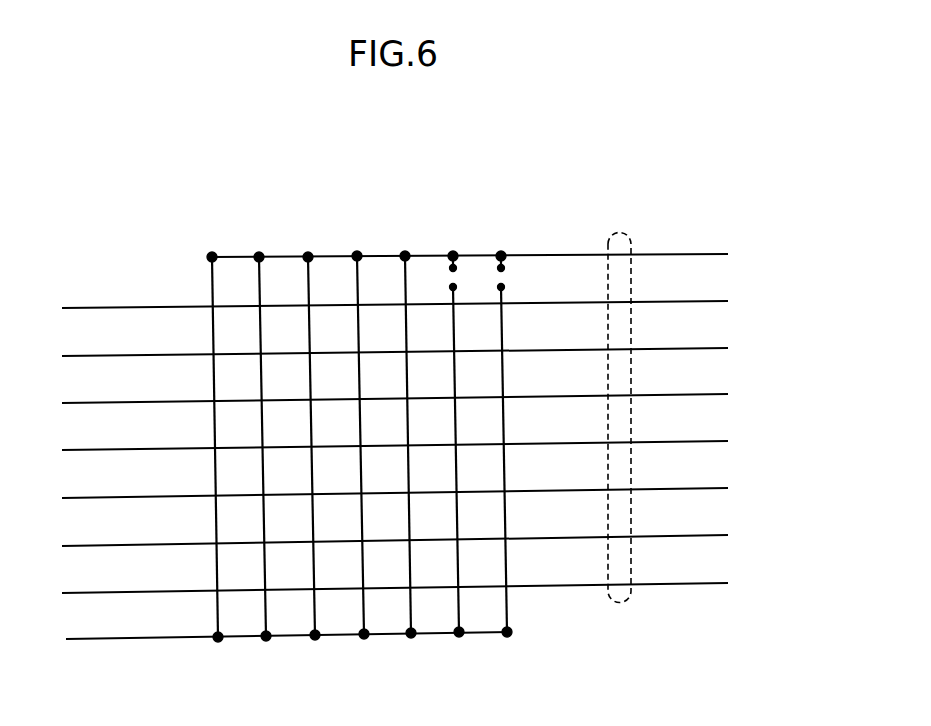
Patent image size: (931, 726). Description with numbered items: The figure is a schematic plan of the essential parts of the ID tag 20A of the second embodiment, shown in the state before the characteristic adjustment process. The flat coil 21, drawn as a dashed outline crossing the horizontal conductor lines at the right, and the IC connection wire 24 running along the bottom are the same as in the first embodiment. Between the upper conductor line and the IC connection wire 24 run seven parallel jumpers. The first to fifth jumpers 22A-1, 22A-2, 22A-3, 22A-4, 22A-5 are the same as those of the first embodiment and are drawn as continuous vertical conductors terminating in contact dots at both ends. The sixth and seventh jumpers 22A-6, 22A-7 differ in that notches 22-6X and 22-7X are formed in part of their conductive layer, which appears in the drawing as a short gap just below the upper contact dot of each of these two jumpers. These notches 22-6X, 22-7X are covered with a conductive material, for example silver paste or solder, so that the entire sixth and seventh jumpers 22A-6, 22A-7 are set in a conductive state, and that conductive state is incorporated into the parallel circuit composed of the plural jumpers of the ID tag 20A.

The ID tag 20A is at (137, 148).
The flat coil 21 is at (614, 232).
The IC connection wire 24 is at (82, 640).
The first jumper 22A-1 is at (212, 283).
The second jumper 22A-2 is at (258, 282).
The third jumper 22A-3 is at (308, 287).
The fourth jumper 22A-4 is at (355, 277).
The fifth jumper 22A-5 is at (403, 283).
The sixth jumper 22A-6 is at (455, 610).
The seventh jumper 22A-7 is at (505, 603).
The notch 22-6X is at (447, 280).
The notch 22-7X is at (500, 279).